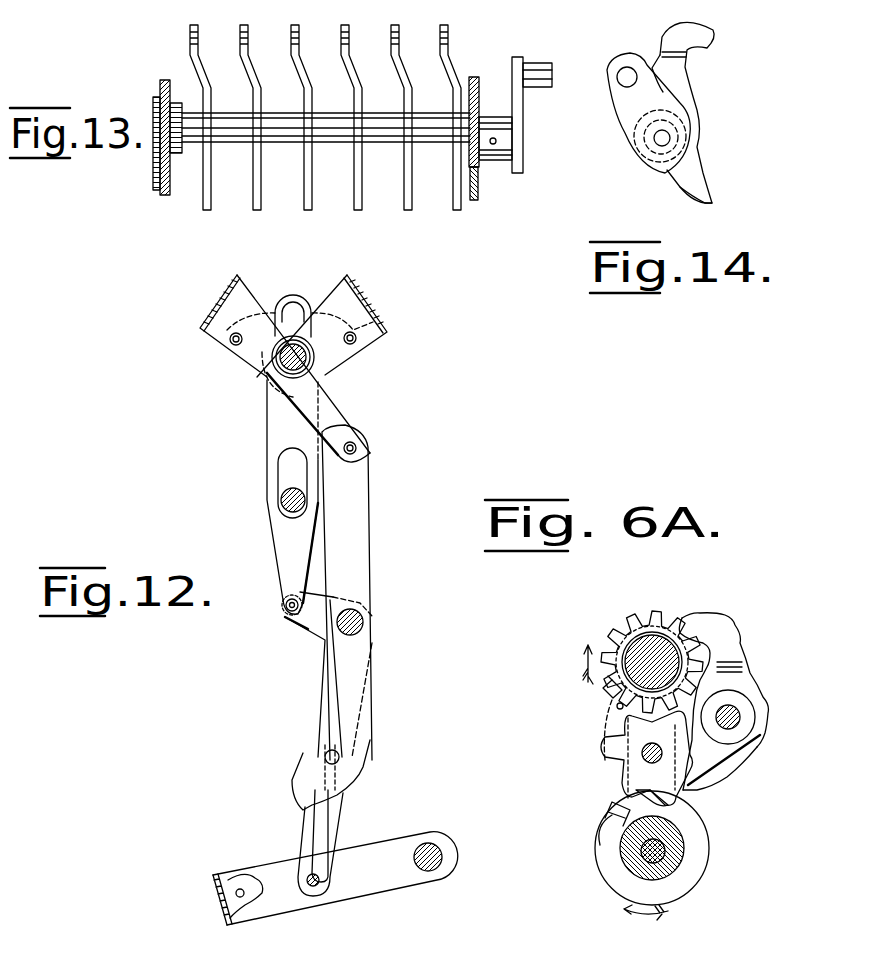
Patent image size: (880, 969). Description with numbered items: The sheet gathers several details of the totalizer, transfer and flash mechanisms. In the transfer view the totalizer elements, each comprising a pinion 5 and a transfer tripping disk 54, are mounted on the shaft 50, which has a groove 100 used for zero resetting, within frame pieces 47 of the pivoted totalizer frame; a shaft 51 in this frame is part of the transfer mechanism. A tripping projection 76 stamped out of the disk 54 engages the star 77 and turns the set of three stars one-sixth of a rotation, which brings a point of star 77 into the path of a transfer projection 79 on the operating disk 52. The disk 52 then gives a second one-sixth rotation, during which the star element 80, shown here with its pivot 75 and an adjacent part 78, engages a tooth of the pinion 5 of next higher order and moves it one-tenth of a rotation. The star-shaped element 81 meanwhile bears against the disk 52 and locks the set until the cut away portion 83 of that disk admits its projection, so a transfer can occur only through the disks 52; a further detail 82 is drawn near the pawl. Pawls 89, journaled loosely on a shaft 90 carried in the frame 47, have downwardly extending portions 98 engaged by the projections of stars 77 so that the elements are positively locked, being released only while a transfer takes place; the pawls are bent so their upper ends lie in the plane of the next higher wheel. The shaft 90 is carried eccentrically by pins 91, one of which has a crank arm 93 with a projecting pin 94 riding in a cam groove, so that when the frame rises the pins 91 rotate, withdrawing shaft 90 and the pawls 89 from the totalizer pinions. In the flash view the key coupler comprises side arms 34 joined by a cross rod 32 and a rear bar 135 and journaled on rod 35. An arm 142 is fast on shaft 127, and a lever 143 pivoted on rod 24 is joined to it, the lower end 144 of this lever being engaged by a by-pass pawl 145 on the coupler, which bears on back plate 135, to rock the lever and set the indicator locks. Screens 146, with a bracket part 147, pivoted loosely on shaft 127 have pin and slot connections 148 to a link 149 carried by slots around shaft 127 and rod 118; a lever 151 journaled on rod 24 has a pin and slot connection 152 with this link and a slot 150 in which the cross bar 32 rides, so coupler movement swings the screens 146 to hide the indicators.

In FIG. 13, the pawls 89 is at (192, 62).
In FIG. 14, the pawls 89 is at (688, 90).
In FIG. 6A, the pawls 89 is at (735, 640).
In FIG. 13, the shaft 90 is at (380, 140).
In FIG. 14, the shaft 90 is at (672, 118).
In FIG. 6A, the shaft 90 is at (740, 727).
In FIG. 13, the pins 91 is at (160, 150).
In FIG. 14, the pins 91 is at (668, 145).
In FIG. 13, the frame pieces 47 is at (165, 195).
In FIG. 13, the crank arm 93 is at (518, 110).
In FIG. 14, the crank arm 93 is at (628, 97).
In FIG. 13, the projecting pin 94 is at (530, 72).
In FIG. 14, the projecting pin 94 is at (621, 69).
In FIG. 14, the downwardly extending portions 98 is at (690, 195).
In FIG. 12, the screens 146 is at (215, 310).
In FIG. 12, the bracket bearing 147 is at (385, 343).
In FIG. 12, the pin and slot connections 148 is at (235, 343).
In FIG. 12, the shaft 127 is at (315, 370).
In FIG. 12, the arm 142 is at (340, 415).
In FIG. 12, the link 149 is at (272, 433).
In FIG. 12, the rod 118 is at (285, 505).
In FIG. 12, the lever 143 is at (360, 565).
In FIG. 12, the pin and slot connection 152 is at (282, 612).
In FIG. 12, the rod 24 is at (364, 624).
In FIG. 12, the lever 151 is at (318, 713).
In FIG. 12, the lower end 144 is at (292, 792).
In FIG. 12, the slot 150 is at (320, 832).
In FIG. 12, the by-pass pawl 145 is at (258, 880).
In FIG. 12, the rod 35 is at (445, 863).
In FIG. 12, the rear bar 135 is at (215, 900).
In FIG. 12, the side arms 34 is at (295, 905).
In FIG. 12, the cross rod 32 is at (320, 885).
In FIG. 6A, the shaft 50 is at (655, 640).
In FIG. 6A, the transfer tripping disk 54 is at (635, 618).
In FIG. 6A, the groove 100 is at (675, 625).
In FIG. 6A, the pinion 5 is at (612, 635).
In FIG. 6A, the star 77 is at (605, 745).
In FIG. 6A, the tripping projection 76 is at (605, 697).
In FIG. 6A, the spring 82 is at (620, 705).
In FIG. 6A, the star-shaped element 81 is at (690, 790).
In FIG. 6A, the star element 80 is at (672, 795).
In FIG. 6A, the pivot pin 75 is at (645, 762).
In FIG. 6A, the pawl 78 is at (636, 792).
In FIG. 6A, the transfer projection 79 is at (606, 814).
In FIG. 6A, the cut away portion 83 is at (600, 848).
In FIG. 6A, the shaft 51 is at (686, 856).
In FIG. 6A, the operating disk 52 is at (685, 885).